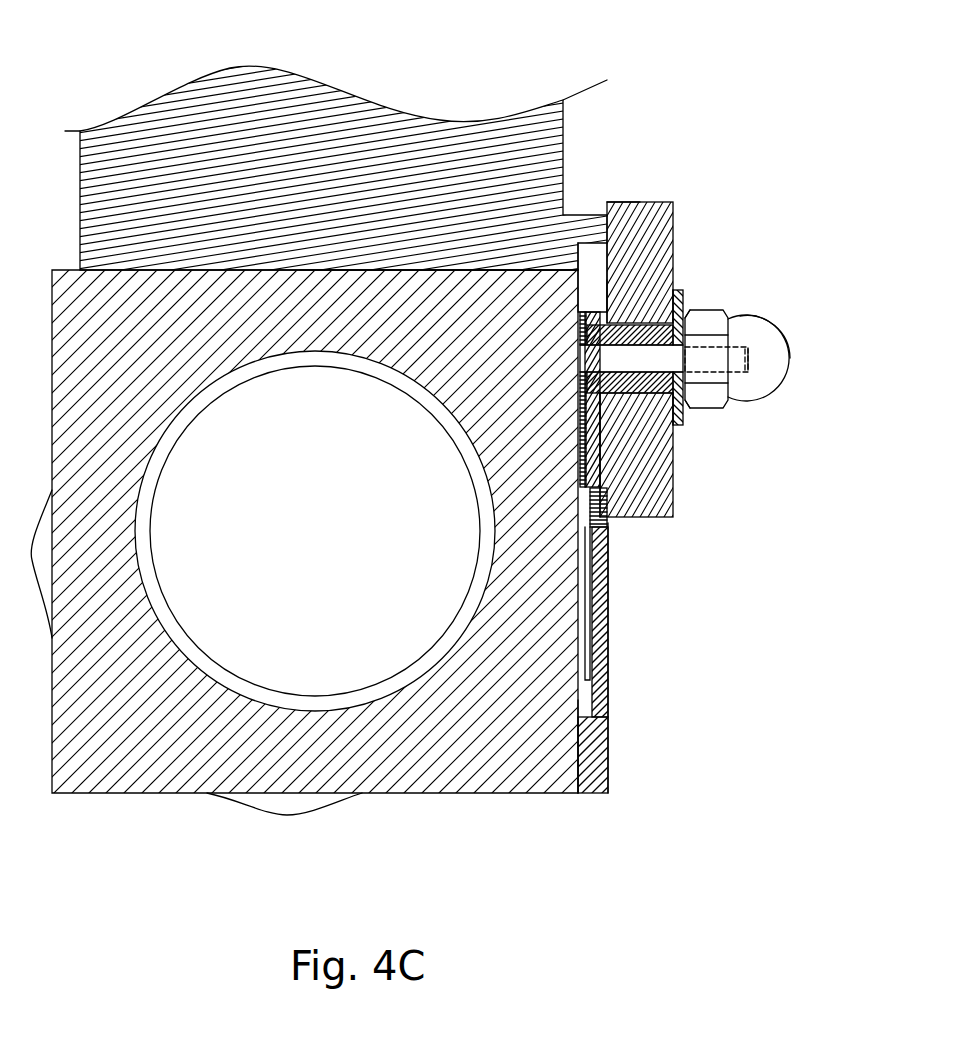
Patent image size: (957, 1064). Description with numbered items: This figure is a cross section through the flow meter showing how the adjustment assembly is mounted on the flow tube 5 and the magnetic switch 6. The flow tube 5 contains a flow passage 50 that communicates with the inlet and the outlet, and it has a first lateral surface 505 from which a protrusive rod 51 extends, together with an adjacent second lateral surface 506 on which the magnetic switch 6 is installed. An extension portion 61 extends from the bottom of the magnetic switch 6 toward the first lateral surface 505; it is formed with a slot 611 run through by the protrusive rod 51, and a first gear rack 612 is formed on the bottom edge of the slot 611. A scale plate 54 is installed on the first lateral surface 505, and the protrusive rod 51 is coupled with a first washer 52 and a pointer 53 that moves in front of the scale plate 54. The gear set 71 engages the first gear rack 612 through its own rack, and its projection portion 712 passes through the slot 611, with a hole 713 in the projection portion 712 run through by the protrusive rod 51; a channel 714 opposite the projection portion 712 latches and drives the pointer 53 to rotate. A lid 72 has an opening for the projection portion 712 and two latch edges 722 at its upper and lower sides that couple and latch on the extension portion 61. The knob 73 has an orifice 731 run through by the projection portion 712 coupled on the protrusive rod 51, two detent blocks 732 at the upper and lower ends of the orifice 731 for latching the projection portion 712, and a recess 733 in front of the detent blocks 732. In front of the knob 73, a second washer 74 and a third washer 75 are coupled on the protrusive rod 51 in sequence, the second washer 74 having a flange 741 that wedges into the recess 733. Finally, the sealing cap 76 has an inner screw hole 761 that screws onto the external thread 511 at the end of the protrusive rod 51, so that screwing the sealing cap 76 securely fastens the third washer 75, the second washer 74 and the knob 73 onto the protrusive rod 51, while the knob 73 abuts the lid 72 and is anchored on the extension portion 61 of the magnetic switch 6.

The flow tube 5 is at (482, 763).
The flow passage 50 is at (240, 625).
The first lateral surface 505 is at (578, 757).
The second lateral surface 506 is at (497, 270).
The magnetic switch 6 is at (468, 147).
The extension portion 61 is at (588, 272).
The slot 611 is at (607, 250).
The first gear rack 612 is at (600, 492).
The protrusive rod 51 is at (610, 353).
The external thread 511 is at (732, 345).
The first washer 52 is at (635, 440).
The pointer 53 is at (590, 600).
The scale plate 54 is at (593, 745).
The gear set 71 is at (595, 443).
The projection portion 712 is at (635, 400).
The hole 713 is at (672, 318).
The channel 714 is at (607, 300).
The lid 72 is at (640, 500).
The latch edges 722 is at (608, 200).
The knob 73 is at (590, 275).
The orifice 731 is at (612, 413).
The detent blocks 732 is at (690, 336).
The recess 733 is at (700, 410).
The second washer 74 is at (682, 322).
The flange 741 is at (678, 398).
The third washer 75 is at (690, 332).
The sealing cap 76 is at (752, 388).
The inner screw hole 761 is at (750, 318).